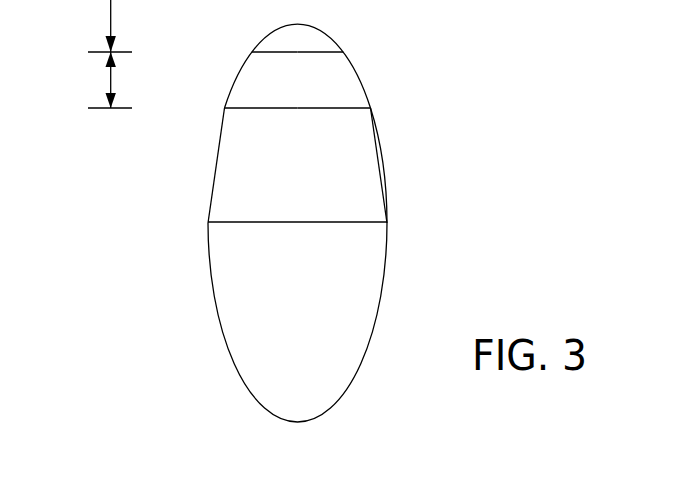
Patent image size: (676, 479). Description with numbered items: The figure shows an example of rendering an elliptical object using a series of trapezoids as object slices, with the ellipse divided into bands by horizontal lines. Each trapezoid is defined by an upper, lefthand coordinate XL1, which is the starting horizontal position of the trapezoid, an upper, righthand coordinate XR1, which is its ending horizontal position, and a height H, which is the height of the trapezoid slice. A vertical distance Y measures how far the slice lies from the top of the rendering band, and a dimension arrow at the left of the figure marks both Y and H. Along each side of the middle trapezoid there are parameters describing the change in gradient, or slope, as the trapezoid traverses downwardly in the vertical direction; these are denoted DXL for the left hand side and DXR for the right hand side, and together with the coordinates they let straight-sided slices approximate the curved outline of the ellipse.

The upper, lefthand coordinate XL1 is at (250, 54).
The upper, righthand coordinate XR1 is at (349, 54).
The change in gradient on the left hand side DXL is at (241, 86).
The change in gradient on the right hand side DXR is at (356, 144).
The vertical distance from the top of the rendering band Y is at (99, 26).
The height of the trapezoid slice H is at (100, 80).